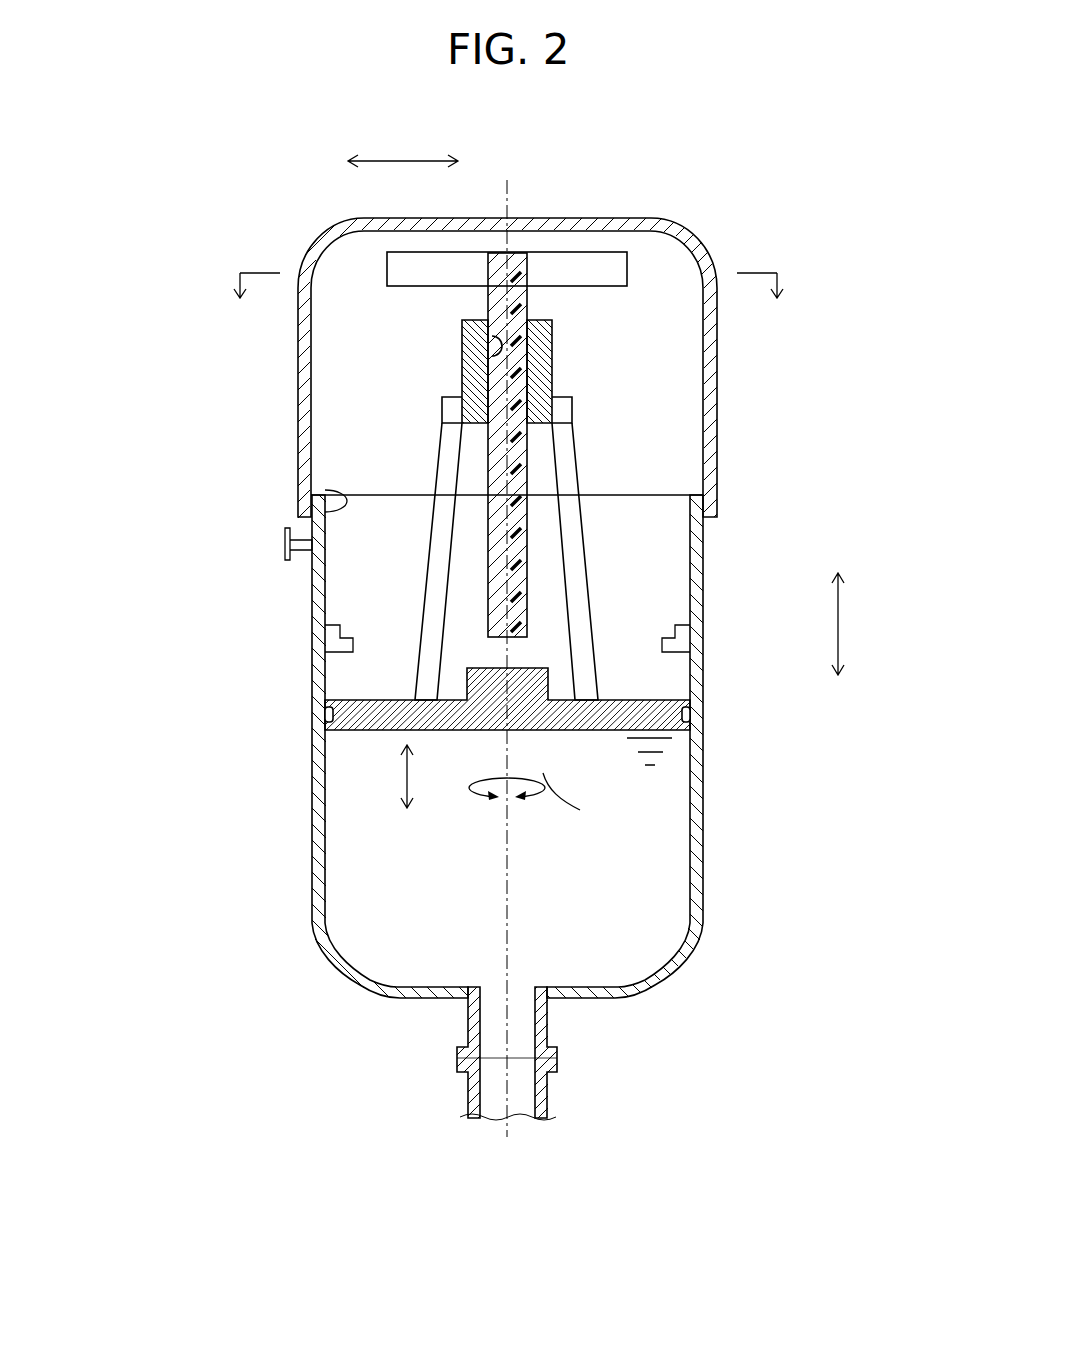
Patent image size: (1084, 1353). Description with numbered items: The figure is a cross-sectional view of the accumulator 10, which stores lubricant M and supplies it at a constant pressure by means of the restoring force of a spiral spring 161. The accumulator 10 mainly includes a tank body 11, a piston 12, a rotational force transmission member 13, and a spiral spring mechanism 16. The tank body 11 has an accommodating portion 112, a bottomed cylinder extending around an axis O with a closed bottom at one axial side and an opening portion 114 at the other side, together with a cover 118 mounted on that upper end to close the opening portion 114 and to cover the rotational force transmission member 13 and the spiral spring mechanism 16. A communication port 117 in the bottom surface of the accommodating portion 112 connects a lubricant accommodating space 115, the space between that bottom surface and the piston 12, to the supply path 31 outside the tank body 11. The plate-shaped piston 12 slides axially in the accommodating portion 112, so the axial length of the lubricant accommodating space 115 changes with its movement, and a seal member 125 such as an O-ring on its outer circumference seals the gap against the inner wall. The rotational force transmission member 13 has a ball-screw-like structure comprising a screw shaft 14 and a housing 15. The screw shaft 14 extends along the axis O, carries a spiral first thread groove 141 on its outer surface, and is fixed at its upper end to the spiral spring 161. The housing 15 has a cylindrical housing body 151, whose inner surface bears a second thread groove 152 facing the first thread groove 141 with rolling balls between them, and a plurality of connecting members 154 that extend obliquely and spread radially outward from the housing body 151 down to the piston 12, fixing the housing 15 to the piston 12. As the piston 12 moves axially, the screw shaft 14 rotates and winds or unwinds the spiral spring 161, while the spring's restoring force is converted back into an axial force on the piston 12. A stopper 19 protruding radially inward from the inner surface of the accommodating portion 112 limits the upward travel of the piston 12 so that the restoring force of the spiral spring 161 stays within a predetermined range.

The accumulator 10 is at (727, 230).
The tank body 11 is at (474, 845).
The accommodating portion 112 is at (318, 818).
The opening portion 114 is at (335, 492).
The lubricant accommodating space 115 is at (648, 858).
The communication port 117 is at (535, 1020).
The cover 118 is at (298, 398).
The piston 12 is at (582, 714).
The seal member 125 is at (692, 717).
The rotational force transmission member 13 is at (525, 476).
The screw shaft 14 is at (635, 445).
The first thread groove 141 is at (528, 552).
The housing 15 is at (500, 509).
The housing body 151 is at (553, 330).
The second thread groove 152 is at (484, 360).
The connecting member 154 is at (448, 470).
The spiral spring mechanism 16 is at (543, 208).
The spiral spring 161 is at (613, 270).
The stopper 19 is at (330, 634).
The supply path 31 is at (562, 1097).
The lubricant M is at (632, 913).
The axis O is at (512, 192).